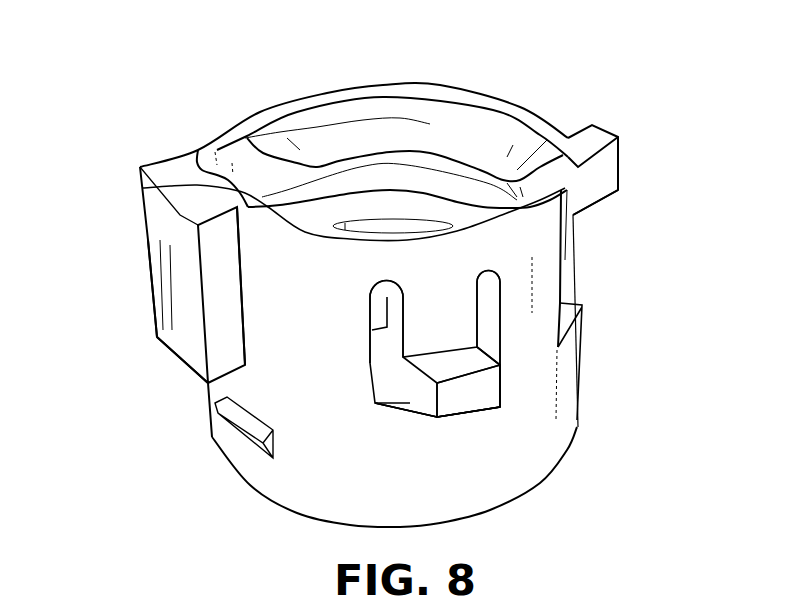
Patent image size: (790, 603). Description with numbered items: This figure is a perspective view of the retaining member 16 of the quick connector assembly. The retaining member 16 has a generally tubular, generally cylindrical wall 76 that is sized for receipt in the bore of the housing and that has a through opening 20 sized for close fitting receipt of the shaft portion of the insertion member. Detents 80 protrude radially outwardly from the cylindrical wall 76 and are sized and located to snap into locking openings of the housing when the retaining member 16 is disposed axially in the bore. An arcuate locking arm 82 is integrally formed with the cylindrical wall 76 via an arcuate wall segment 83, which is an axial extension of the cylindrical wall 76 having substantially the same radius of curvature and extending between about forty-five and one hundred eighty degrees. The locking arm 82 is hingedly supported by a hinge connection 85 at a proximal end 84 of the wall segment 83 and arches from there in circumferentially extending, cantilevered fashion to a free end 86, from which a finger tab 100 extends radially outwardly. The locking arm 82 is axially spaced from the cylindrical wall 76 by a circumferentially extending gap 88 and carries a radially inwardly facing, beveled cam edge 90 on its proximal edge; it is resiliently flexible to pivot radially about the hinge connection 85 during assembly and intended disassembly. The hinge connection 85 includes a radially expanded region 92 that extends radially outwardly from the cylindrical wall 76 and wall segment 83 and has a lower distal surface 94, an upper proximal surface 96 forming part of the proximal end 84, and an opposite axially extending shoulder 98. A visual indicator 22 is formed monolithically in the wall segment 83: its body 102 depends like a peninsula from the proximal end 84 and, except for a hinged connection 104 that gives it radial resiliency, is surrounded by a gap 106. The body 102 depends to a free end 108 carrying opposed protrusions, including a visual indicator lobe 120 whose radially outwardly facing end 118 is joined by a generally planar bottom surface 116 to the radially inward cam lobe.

The retaining member 16 is at (563, 87).
The through opening 20 is at (346, 66).
The visual indicator 22 is at (466, 360).
The cylindrical wall 76 is at (545, 445).
The detent 80 is at (214, 433).
The locking arm 82 is at (470, 107).
The wall segment 83 is at (548, 280).
The proximal end 84 is at (143, 189).
The hinge connection 85 is at (188, 153).
The free end 86 is at (583, 191).
The gap 88 is at (396, 180).
The cam edge 90 is at (343, 132).
The radially expanded region 92 is at (176, 307).
The lower distal surface 94 is at (173, 357).
The upper proximal surface 96 is at (157, 170).
The shoulder 98 is at (236, 322).
The finger tab 100 is at (618, 165).
The body 102 is at (430, 327).
The hinged connection 104 is at (460, 283).
The gap 106 is at (562, 318).
The free end 108 is at (398, 403).
The bottom surface 116 is at (398, 403).
The radially outwardly facing end 118 is at (470, 393).
The visual indicator lobe 120 is at (505, 380).